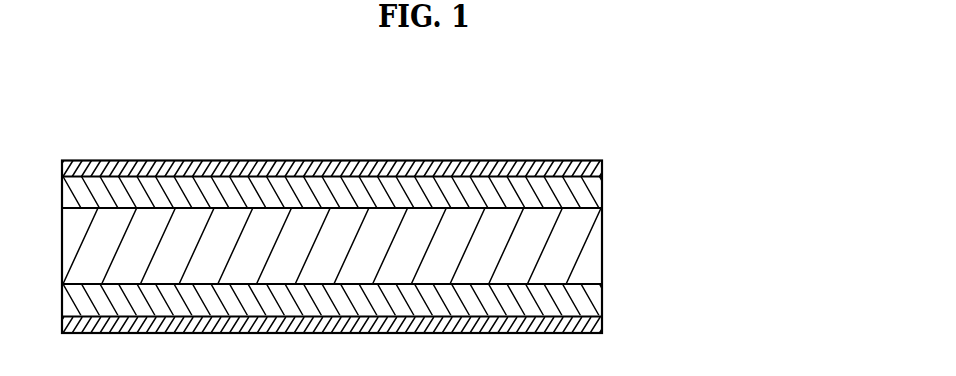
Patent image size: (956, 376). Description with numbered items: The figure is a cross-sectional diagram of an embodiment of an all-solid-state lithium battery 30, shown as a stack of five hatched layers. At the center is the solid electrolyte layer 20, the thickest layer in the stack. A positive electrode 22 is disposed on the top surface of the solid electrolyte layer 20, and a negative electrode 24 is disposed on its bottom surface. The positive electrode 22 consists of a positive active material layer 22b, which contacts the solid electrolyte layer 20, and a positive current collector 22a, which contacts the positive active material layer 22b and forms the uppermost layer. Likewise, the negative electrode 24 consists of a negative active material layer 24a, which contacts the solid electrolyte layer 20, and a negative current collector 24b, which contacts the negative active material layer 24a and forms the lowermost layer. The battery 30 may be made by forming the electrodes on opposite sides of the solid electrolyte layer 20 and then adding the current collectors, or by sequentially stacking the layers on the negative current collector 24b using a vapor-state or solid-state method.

The all-solid-state lithium battery 30 is at (623, 151).
The solid electrolyte layer 20 is at (602, 240).
The positive electrode 22 is at (416, 179).
The positive current collector 22a is at (602, 169).
The positive active material layer 22b is at (602, 195).
The negative electrode 24 is at (417, 308).
The negative active material layer 24a is at (602, 296).
The negative current collector 24b is at (602, 327).